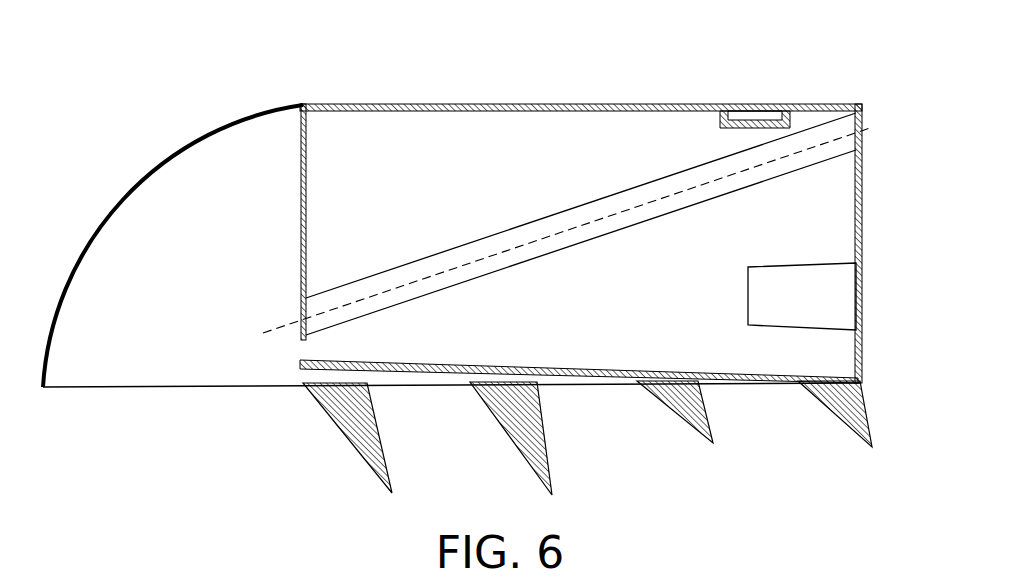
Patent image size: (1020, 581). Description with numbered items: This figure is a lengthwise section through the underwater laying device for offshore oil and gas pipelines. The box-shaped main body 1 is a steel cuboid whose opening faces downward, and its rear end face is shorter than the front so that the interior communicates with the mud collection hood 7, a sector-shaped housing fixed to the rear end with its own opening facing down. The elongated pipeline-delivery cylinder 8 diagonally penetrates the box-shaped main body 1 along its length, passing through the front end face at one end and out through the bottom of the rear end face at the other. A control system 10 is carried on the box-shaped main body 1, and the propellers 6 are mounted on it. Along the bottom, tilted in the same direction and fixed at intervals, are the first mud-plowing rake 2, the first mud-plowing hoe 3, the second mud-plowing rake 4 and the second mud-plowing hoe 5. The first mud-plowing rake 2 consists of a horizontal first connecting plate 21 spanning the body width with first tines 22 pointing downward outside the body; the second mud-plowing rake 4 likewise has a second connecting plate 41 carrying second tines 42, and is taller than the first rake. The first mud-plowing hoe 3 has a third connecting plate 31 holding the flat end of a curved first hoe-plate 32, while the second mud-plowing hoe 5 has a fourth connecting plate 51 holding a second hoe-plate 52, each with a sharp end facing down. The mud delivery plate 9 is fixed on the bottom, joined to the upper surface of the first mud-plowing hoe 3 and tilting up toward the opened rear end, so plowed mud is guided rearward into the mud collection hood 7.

The box-shaped main body 1 is at (655, 128).
The control system 10 is at (762, 113).
The mud collection hood 7 is at (217, 200).
The elongated pipeline-delivery cylinder 8 is at (815, 148).
The propellers 6 is at (827, 297).
The mud delivery plate 9 is at (317, 368).
The first mud-plowing rake 2 is at (880, 394).
The first connecting plate 21 is at (912, 370).
The first tines 22 is at (912, 420).
The first mud-plowing hoe 3 is at (725, 428).
The third connecting plate 31 is at (705, 398).
The first hoe-plate 32 is at (712, 443).
The second mud-plowing rake 4 is at (557, 438).
The second connecting plate 41 is at (540, 395).
The second tines 42 is at (548, 455).
The second mud-plowing hoe 5 is at (389, 438).
The fourth connecting plate 51 is at (372, 397).
The second hoe-plate 52 is at (432, 478).